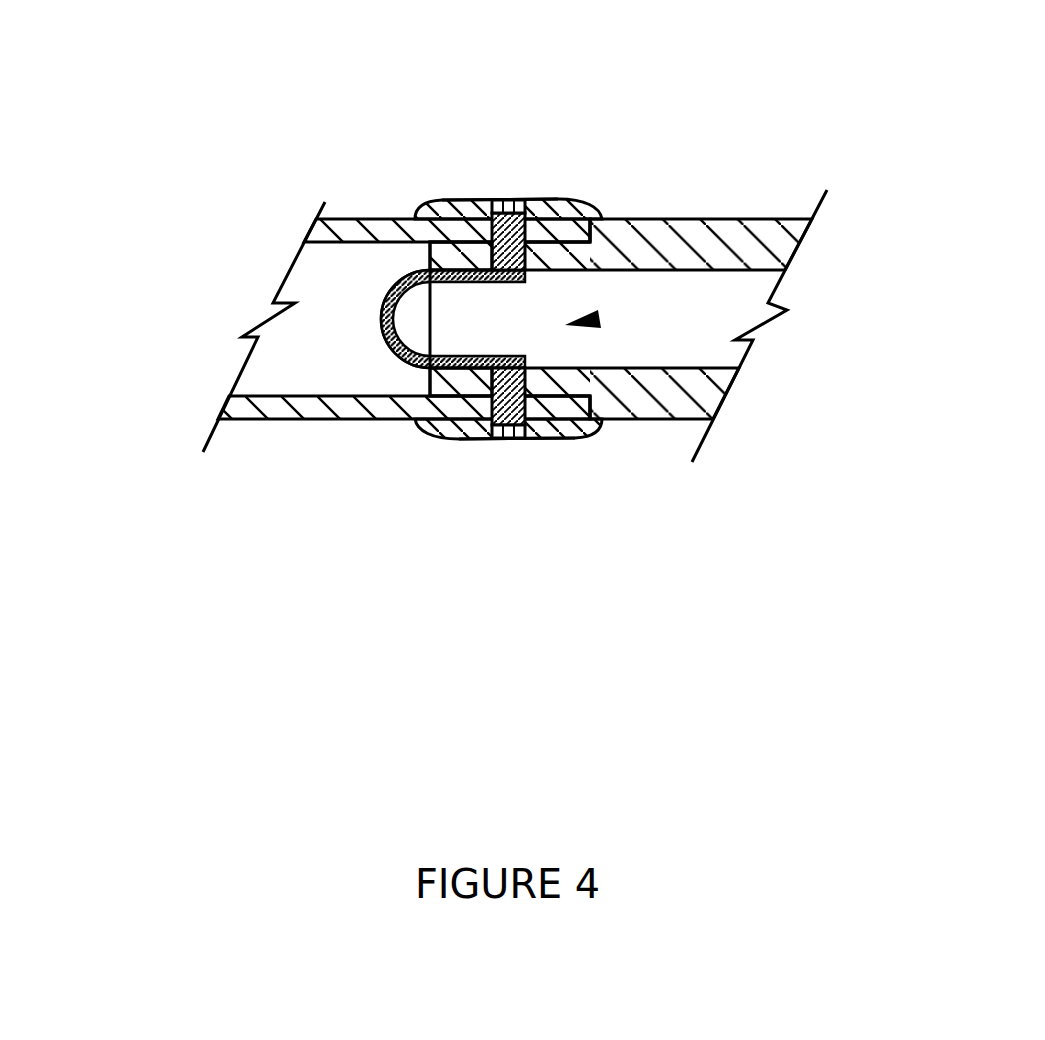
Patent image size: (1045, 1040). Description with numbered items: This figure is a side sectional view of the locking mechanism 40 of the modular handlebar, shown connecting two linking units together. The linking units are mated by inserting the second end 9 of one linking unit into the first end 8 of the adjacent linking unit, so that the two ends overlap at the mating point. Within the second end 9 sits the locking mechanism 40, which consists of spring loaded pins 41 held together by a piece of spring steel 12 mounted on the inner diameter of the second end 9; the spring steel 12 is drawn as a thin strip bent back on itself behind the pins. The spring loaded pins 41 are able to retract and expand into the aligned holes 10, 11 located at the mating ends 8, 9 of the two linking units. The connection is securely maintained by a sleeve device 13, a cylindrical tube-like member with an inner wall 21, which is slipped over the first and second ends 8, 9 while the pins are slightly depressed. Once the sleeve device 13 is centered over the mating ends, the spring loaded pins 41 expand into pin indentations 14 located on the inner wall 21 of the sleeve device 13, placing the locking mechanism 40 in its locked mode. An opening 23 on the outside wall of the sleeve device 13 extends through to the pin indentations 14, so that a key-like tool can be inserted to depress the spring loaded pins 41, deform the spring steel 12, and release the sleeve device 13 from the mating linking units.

The first end 8 is at (773, 297).
The second end 9 is at (428, 275).
The hole 10 is at (490, 213).
The hole 11 is at (492, 243).
The spring steel 12 is at (378, 320).
The sleeve device 13 is at (570, 203).
The pin indentations 14 is at (490, 207).
The inner wall 21 is at (333, 237).
The opening 23 is at (510, 200).
The locking mechanism 40 is at (598, 319).
The spring loaded pins 41 is at (527, 237).